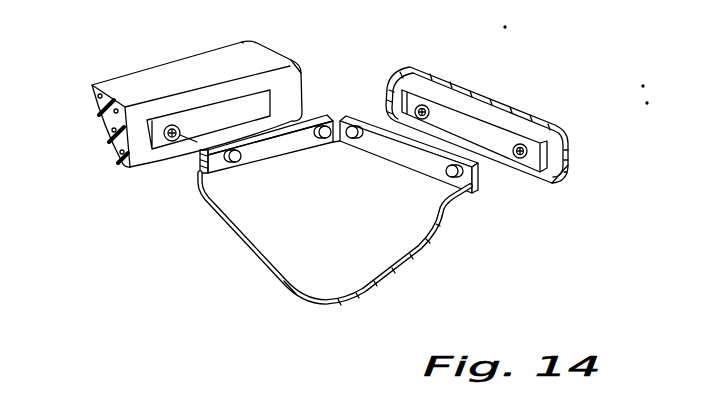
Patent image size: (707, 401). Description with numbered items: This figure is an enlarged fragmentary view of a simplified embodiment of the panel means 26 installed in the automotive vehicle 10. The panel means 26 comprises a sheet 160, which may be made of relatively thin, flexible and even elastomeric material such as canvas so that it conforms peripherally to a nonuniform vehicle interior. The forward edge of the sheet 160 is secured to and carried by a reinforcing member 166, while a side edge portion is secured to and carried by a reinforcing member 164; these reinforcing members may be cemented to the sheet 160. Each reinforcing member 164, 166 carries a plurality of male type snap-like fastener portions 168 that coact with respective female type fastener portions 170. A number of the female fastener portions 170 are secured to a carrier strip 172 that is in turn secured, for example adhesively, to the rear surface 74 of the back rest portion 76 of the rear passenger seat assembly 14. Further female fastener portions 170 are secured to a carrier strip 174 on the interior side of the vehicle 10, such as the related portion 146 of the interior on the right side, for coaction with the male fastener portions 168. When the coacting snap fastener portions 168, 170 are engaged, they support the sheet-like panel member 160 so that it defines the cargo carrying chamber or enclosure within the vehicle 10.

The automotive vehicle 10 is at (527, 107).
The rear passenger seat assembly 14 is at (117, 83).
The panel means 26 is at (296, 292).
The rear surface of seat back rest 74 is at (292, 82).
The back rest portion 76 is at (242, 55).
The related portion of vehicle interior 146 is at (555, 183).
The sheet 160 is at (327, 257).
The reinforcing member 164 is at (387, 143).
The reinforcing member 166 is at (285, 138).
The male type snap-like fastener portions 168 is at (233, 162).
The female type fastener portions 170 is at (258, 92).
The carrier strip 172 is at (202, 120).
The carrier strip 174 is at (457, 122).